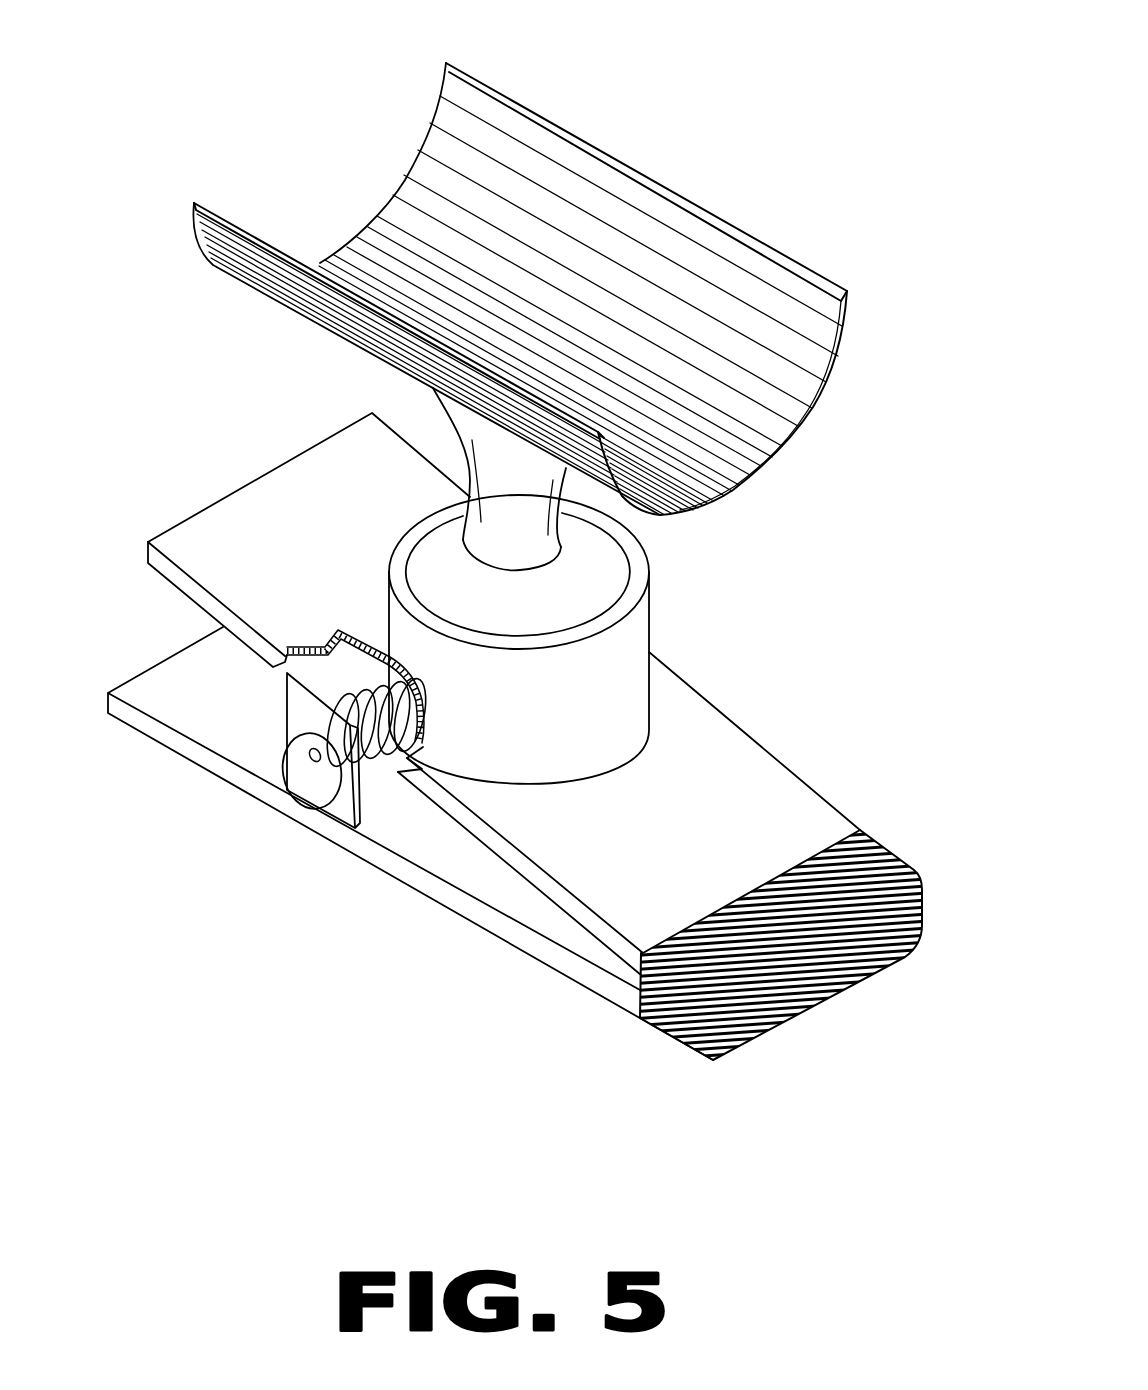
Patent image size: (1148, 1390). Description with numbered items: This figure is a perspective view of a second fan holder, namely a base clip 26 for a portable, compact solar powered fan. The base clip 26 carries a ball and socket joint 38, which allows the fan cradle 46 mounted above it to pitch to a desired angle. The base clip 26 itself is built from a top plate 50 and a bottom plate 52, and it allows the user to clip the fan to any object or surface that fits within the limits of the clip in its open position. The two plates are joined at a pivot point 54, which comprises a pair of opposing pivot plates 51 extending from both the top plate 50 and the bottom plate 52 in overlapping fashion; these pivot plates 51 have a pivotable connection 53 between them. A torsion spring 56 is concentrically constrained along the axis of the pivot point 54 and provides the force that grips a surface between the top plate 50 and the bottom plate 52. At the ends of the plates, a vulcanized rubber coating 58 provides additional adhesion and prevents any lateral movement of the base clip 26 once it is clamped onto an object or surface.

The base clip 26 is at (806, 210).
The fan cradle 46 is at (387, 237).
The ball and socket joint 38 is at (588, 570).
The top plate 50 is at (543, 882).
The pivot plates 51 is at (362, 763).
The bottom plate 52 is at (577, 965).
The pivotable connection 53 is at (287, 735).
The pivot point 54 is at (343, 746).
The torsion spring 56 is at (400, 773).
The vulcanized rubber coating 58 is at (817, 1007).